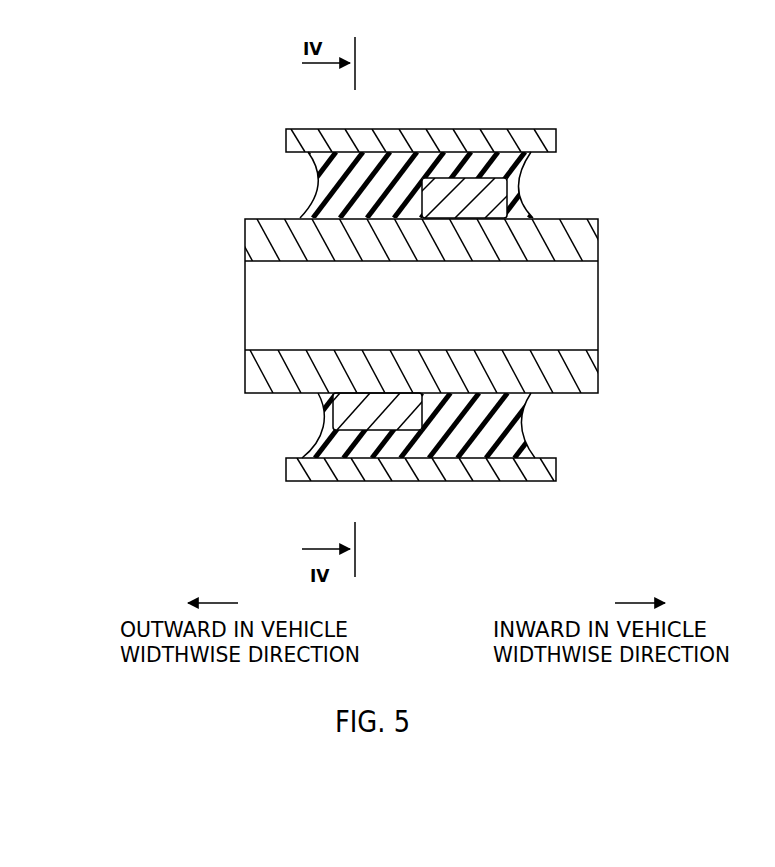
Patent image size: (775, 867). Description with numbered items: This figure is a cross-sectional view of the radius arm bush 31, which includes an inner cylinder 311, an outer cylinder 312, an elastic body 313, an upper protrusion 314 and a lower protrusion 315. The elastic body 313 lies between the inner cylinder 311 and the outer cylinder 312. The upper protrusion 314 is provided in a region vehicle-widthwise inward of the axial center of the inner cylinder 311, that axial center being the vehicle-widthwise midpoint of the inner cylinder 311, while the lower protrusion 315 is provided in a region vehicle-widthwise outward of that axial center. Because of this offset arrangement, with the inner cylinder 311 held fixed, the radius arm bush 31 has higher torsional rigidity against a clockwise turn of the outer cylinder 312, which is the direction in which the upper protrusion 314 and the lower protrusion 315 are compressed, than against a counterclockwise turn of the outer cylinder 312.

The radius arm bush 31 is at (190, 147).
The inner cylinder 311 is at (245, 240).
The outer cylinder 312 is at (288, 472).
The elastic body 313 is at (316, 192).
The upper protrusion 314 is at (470, 180).
The lower protrusion 315 is at (338, 404).